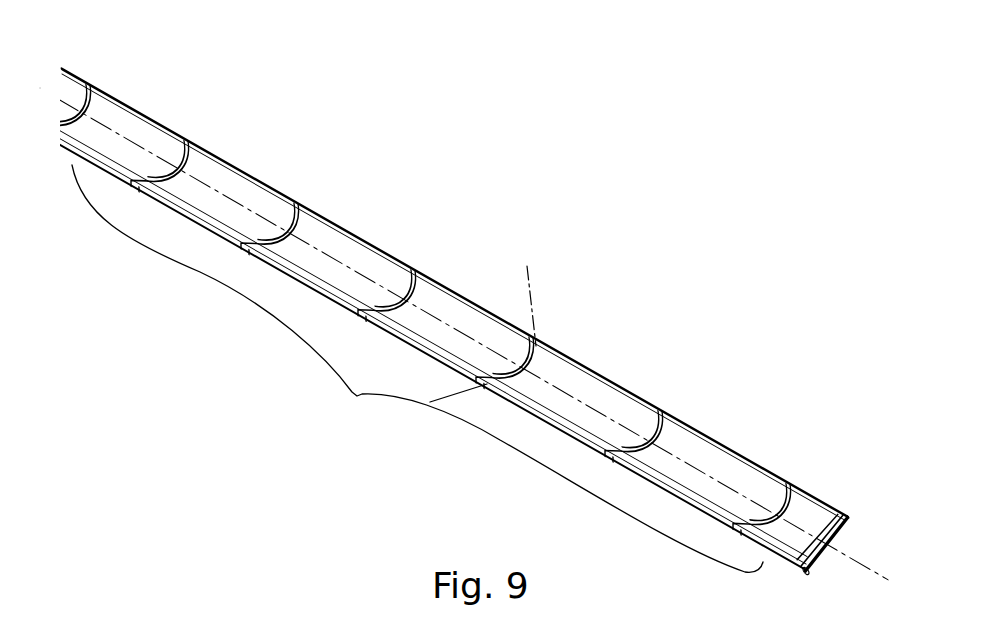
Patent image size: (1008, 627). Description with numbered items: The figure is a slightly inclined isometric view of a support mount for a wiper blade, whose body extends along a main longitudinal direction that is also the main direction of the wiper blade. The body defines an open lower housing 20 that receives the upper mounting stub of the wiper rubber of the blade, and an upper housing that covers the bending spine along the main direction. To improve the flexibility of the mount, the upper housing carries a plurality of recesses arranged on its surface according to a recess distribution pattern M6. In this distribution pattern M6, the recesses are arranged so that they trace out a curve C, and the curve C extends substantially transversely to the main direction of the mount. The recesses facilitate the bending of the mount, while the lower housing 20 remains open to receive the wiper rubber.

The open lower housing 20 is at (464, 334).
The curve C is at (532, 285).
The recess distribution pattern M6 is at (417, 368).